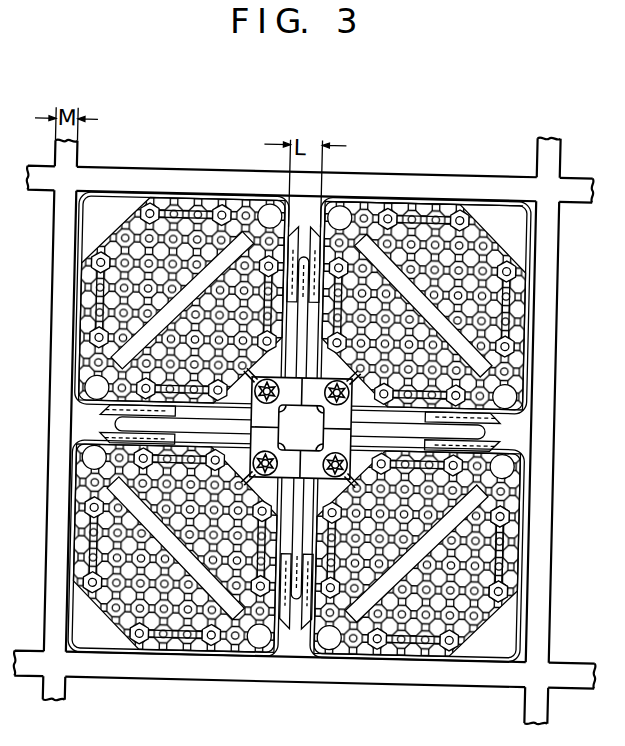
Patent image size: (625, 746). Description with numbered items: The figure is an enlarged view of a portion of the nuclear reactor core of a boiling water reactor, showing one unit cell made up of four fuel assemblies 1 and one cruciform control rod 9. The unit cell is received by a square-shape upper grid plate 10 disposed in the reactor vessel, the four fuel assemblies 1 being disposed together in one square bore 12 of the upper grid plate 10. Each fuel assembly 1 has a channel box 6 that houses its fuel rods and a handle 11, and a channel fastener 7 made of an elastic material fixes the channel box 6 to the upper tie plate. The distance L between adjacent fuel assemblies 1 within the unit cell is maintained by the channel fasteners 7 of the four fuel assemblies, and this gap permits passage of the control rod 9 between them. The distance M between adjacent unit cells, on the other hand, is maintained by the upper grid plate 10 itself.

The fuel assembly 1 is at (228, 228).
The channel box 6 is at (423, 199).
The channel fastener 7 is at (470, 411).
The cruciform control rod 9 is at (495, 432).
The upper grid plate 10 is at (370, 193).
The handle 11 is at (504, 514).
The square bore 12 is at (533, 228).